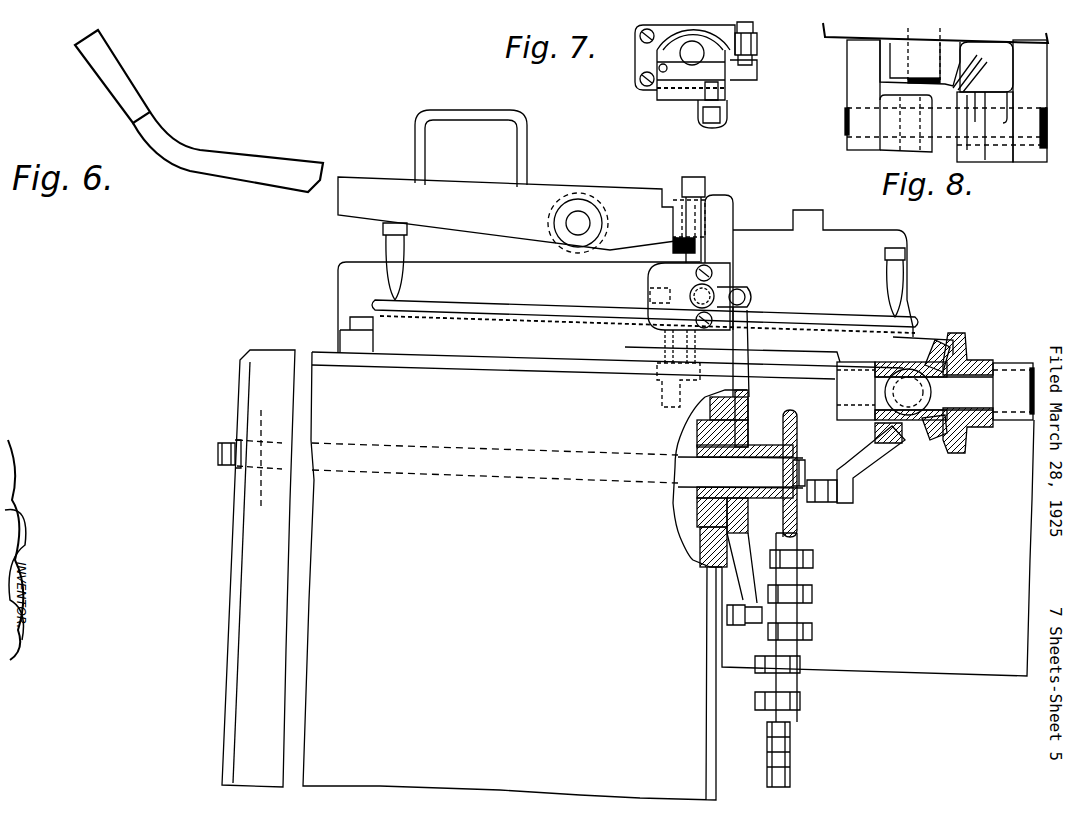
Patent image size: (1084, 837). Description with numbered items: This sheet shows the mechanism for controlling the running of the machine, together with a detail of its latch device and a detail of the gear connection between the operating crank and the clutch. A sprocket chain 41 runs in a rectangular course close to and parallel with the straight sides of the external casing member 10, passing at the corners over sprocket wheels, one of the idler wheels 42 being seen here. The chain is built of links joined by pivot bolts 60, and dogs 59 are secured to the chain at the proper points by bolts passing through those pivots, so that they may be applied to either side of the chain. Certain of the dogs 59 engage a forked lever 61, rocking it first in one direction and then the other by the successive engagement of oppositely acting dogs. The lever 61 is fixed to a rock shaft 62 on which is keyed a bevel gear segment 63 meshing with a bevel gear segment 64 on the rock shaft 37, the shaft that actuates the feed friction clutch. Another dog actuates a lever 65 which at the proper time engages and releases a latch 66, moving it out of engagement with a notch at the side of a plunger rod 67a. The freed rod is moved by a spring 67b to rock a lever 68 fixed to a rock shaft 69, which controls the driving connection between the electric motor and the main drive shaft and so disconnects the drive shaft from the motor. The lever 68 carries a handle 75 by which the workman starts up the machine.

In FIG. 6, the handle 75 is at (128, 69).
In FIG. 6, the external casing member 10 is at (277, 335).
In FIG. 6, the lever 68 is at (521, 213).
In FIG. 6, the rock shaft 69 is at (578, 222).
In FIG. 6, the plunger rod 67a is at (677, 257).
In FIG. 7, the plunger rod 67a is at (683, 158).
In FIG. 6, the spring 67b is at (672, 334).
In FIG. 6, the latch 66 is at (743, 289).
In FIG. 7, the latch 66 is at (748, 78).
In FIG. 6, the lever 65 is at (757, 320).
In FIG. 7, the lever 65 is at (757, 43).
In FIG. 6, the idler sprocket wheel 42 is at (798, 435).
In FIG. 6, the dog 59 is at (800, 614).
In FIG. 6, the pivot bolt 60 is at (812, 586).
In FIG. 6, the sprocket chain 41 is at (797, 752).
In FIG. 6, the rock shaft 37 is at (895, 362).
In FIG. 8, the rock shaft 37 is at (912, 60).
In FIG. 6, the bevel gear segment 64 is at (910, 362).
In FIG. 8, the bevel gear segment 64 is at (960, 63).
In FIG. 6, the bevel gear segment 63 is at (963, 347).
In FIG. 8, the bevel gear segment 63 is at (967, 158).
In FIG. 6, the rock shaft 62 is at (998, 391).
In FIG. 8, the rock shaft 62 is at (845, 118).
In FIG. 6, the lever 61 is at (856, 463).